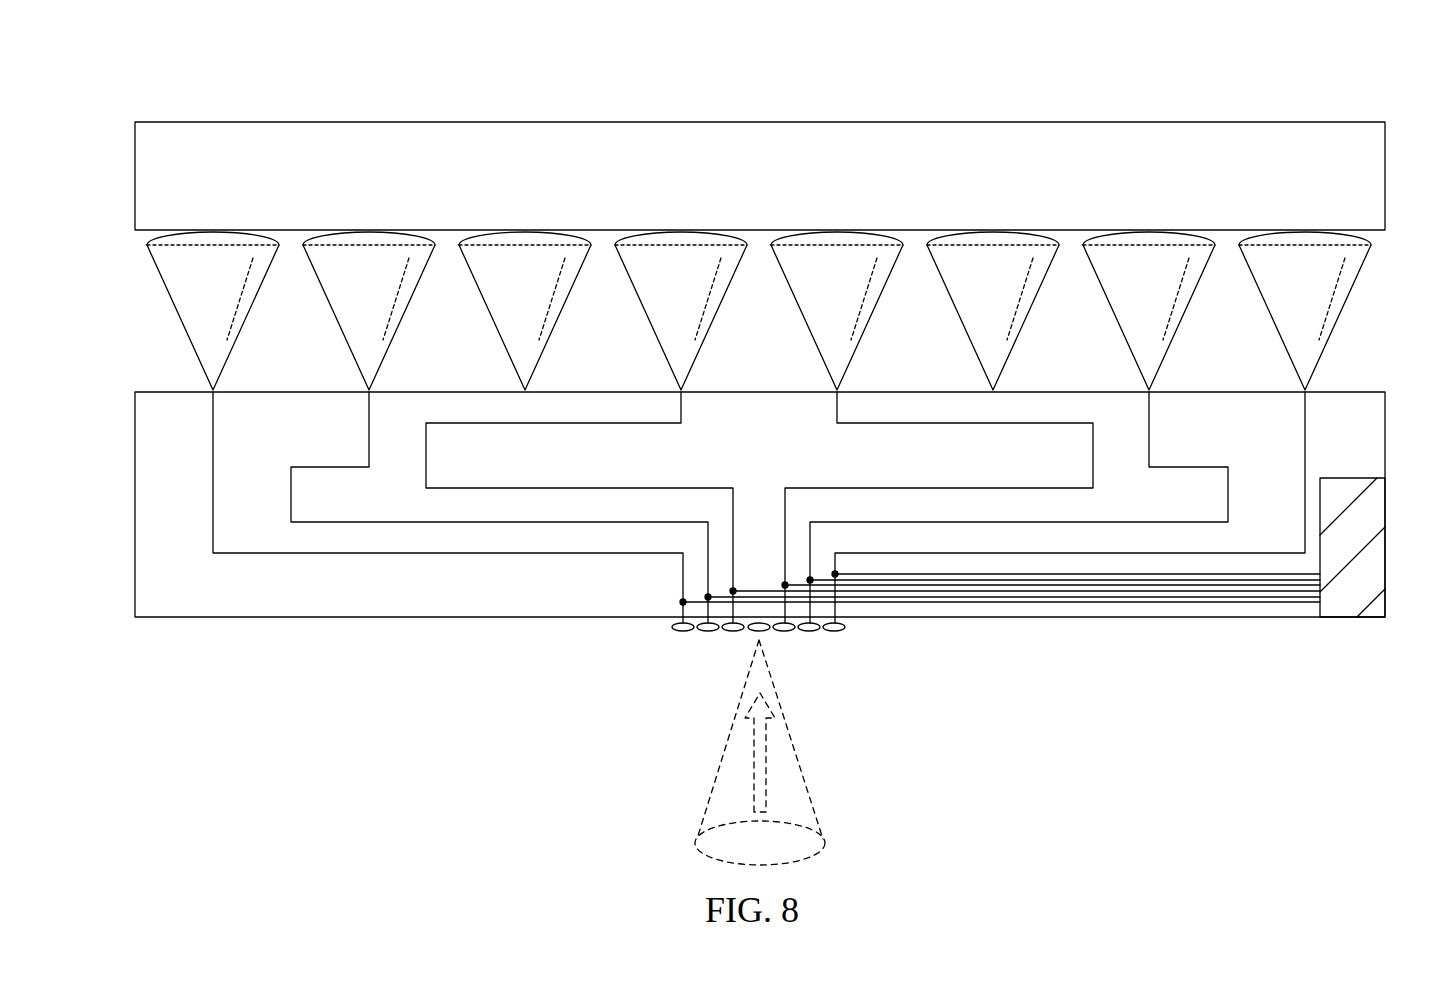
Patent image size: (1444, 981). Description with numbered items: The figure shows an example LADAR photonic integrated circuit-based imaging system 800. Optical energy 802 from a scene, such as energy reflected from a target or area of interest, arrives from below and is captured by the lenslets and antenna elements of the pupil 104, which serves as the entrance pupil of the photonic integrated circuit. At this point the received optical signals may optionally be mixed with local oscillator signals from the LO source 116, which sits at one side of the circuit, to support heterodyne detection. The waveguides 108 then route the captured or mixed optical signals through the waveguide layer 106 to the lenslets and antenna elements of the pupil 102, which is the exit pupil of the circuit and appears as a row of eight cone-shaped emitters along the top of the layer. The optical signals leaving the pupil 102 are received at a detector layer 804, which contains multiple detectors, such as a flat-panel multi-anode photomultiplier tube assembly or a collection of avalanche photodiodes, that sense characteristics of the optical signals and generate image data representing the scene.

The LADAR photonic integrated circuit-based imaging system 800 is at (462, 86).
The detector layer 804 is at (945, 130).
The pupil 102 is at (1357, 320).
The waveguide layer 106 is at (143, 503).
The waveguides 108 is at (368, 438).
The pupil 104 is at (860, 630).
The LO source 116 is at (1338, 613).
The optical energy 802 is at (719, 762).